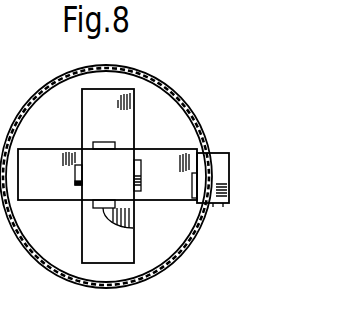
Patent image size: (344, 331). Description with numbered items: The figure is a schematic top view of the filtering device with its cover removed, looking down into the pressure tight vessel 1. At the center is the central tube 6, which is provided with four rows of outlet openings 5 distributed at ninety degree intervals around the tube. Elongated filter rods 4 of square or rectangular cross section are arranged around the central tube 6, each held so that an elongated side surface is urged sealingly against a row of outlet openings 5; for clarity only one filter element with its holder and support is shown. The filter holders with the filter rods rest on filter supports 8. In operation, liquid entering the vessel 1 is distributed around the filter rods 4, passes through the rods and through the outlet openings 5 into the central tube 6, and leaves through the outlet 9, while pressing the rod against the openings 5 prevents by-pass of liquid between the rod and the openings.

The pressure tight vessel 1 is at (174, 258).
The filter rod 4 is at (176, 150).
The outlet openings 5 is at (143, 173).
The central tube 6 is at (100, 188).
The filter support 8 is at (123, 89).
The outlet 9 is at (214, 207).